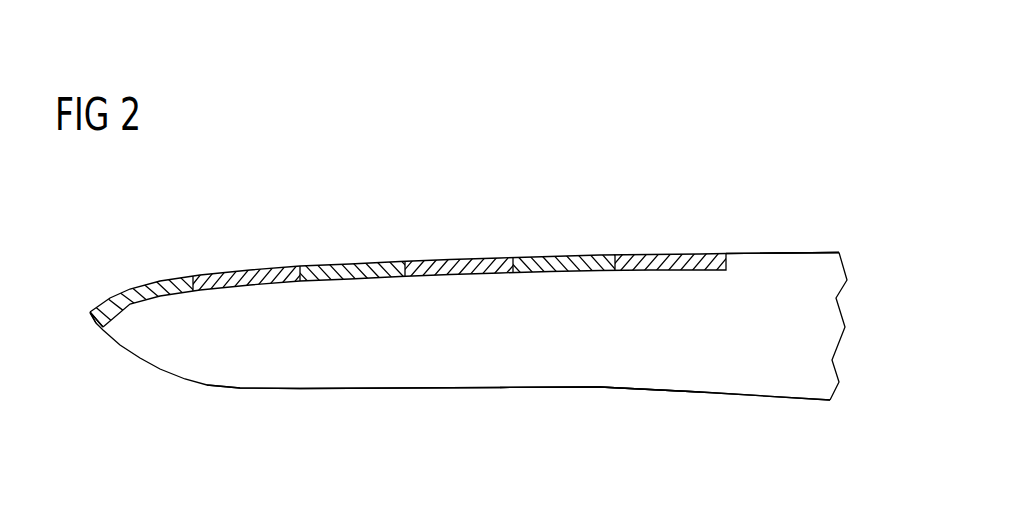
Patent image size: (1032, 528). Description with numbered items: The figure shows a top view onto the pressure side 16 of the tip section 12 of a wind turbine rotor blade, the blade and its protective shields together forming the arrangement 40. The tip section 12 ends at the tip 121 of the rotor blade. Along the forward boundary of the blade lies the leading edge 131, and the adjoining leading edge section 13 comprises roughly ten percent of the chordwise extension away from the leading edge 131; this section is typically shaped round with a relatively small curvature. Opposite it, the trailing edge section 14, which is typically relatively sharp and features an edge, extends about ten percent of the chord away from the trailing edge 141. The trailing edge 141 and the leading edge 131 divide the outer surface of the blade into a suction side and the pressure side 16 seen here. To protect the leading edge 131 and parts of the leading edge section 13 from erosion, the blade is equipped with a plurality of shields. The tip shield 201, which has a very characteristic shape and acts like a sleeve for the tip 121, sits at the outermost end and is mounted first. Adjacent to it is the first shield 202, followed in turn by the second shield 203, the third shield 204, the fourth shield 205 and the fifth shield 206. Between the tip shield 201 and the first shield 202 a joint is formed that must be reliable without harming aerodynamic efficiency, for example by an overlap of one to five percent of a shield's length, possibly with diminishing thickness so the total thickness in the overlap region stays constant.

The arrangement 40 is at (391, 162).
The tip section 12 is at (243, 300).
The tip 121 is at (88, 314).
The leading edge section 13 is at (755, 265).
The leading edge 131 is at (810, 253).
The trailing edge section 14 is at (527, 375).
The trailing edge 141 is at (587, 388).
The pressure side 16 is at (827, 337).
The tip shield 201 is at (148, 290).
The first shield 202 is at (252, 270).
The second shield 203 is at (357, 265).
The third shield 204 is at (462, 261).
The fourth shield 205 is at (571, 257).
The fifth shield 206 is at (678, 254).